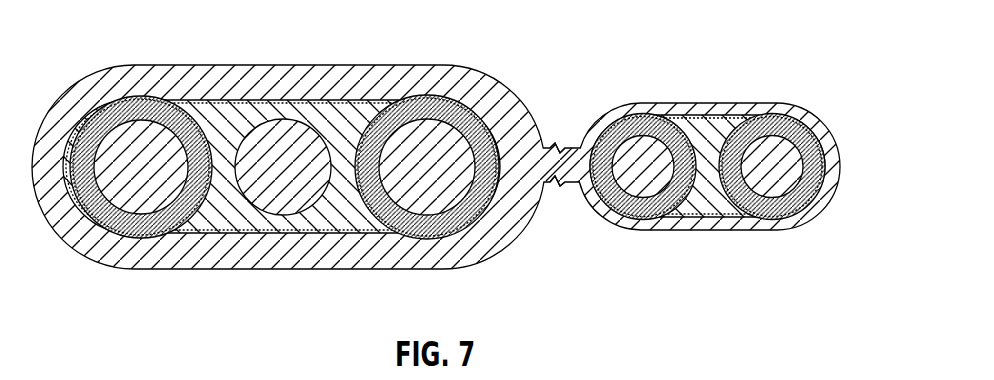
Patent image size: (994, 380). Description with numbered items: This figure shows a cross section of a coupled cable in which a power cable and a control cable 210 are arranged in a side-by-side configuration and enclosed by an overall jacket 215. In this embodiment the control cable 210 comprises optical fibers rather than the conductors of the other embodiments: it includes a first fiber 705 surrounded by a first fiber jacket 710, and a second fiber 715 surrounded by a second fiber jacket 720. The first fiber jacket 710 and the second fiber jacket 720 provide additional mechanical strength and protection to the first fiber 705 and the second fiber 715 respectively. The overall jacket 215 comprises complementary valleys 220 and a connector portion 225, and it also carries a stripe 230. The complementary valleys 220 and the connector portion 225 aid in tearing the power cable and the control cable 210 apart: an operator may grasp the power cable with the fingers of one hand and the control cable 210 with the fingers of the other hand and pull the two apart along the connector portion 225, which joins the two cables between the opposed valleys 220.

The control cable 210 is at (721, 247).
The overall jacket 215 is at (805, 132).
The complementary valleys 220 is at (565, 80).
The connector portion 225 is at (557, 140).
The stripe 230 is at (833, 168).
The first fiber 705 is at (655, 122).
The first fiber jacket 710 is at (672, 125).
The second fiber 715 is at (785, 138).
The second fiber jacket 720 is at (733, 132).